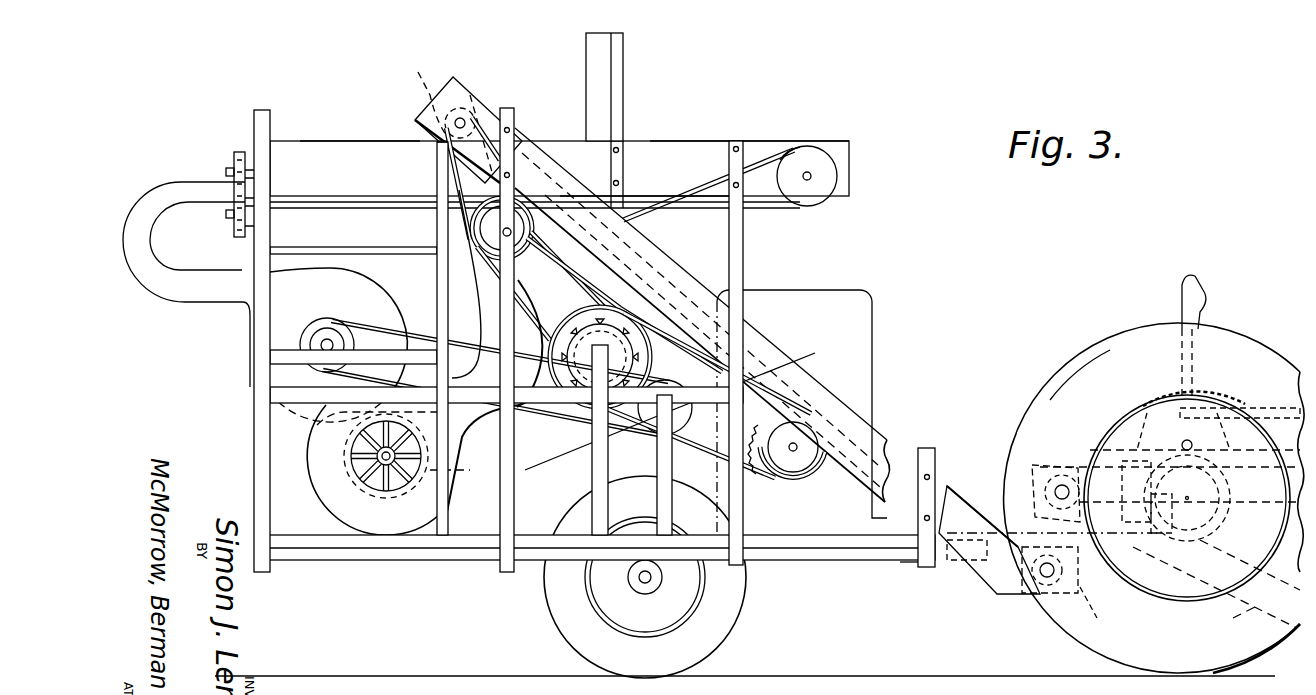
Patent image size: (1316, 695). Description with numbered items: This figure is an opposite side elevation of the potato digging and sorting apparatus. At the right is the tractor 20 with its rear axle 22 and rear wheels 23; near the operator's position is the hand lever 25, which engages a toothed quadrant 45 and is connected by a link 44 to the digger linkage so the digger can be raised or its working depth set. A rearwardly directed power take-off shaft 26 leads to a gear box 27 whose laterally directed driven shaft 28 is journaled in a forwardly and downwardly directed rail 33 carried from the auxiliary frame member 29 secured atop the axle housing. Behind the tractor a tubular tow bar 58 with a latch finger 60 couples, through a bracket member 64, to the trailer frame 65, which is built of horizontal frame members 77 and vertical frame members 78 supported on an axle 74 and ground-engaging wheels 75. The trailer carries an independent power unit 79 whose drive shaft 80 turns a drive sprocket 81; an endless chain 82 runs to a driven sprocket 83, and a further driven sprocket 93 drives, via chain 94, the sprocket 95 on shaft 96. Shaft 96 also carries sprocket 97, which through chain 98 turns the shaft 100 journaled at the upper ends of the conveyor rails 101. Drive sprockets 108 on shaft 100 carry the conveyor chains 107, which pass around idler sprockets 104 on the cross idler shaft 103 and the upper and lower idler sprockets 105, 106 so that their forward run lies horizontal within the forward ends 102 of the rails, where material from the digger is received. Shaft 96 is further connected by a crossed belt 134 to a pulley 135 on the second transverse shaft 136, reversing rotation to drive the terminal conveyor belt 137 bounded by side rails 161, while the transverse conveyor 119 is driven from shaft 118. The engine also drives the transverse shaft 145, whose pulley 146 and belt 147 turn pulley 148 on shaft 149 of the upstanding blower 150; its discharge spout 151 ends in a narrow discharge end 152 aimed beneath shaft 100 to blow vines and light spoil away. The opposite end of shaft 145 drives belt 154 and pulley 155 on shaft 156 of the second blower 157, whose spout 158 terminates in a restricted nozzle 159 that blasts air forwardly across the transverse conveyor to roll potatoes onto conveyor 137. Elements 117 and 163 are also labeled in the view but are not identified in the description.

The tractor 20 is at (1262, 335).
The rear axle 22 is at (1230, 513).
The rear wheels 23 is at (1118, 340).
The hand lever 25 is at (1181, 282).
The power take-off shaft 26 is at (1150, 460).
The gear box 27 is at (1063, 483).
The driven shaft 28 is at (1028, 468).
The auxiliary frame member 29 is at (1244, 472).
The rail 33 is at (1258, 606).
The link 44 is at (1262, 408).
The toothed quadrant 45 is at (1178, 398).
The tow bar 58 is at (1002, 520).
The latch finger 60 is at (604, 66).
The bracket member 64 is at (962, 490).
The trailer frame 65 is at (915, 566).
The axle 74 is at (630, 588).
The ground-engaging wheels 75 is at (550, 598).
The horizontal frame members 77 is at (270, 397).
The vertical frame members 78 is at (268, 110).
The power unit 79 is at (872, 320).
The drive shaft 80 is at (794, 452).
The drive sprocket 81 is at (820, 480).
The endless chain 82 is at (764, 490).
The driven sprocket 83 is at (640, 358).
The driven sprocket 93 is at (578, 318).
The chain 94 is at (590, 280).
The sprocket 95 is at (560, 258).
The shaft 96 is at (510, 228).
The sprocket 97 is at (475, 221).
The chain 98 is at (462, 202).
The shaft 100 is at (460, 118).
The conveyor rails 101 is at (540, 160).
The forward ends 102 is at (1104, 614).
The cross idler shaft 103 is at (1035, 600).
The idler sprockets 104 is at (1085, 592).
The upper idler sprocket 105 is at (975, 580).
The lower idler sprocket 106 is at (1003, 586).
The conveyor chains 107 is at (880, 425).
The drive sprockets 108 is at (424, 90).
The flange 117 is at (239, 160).
The shaft 118 is at (226, 172).
The conveyor 119 is at (350, 144).
The crossed belt 134 is at (683, 197).
The pulley 135 is at (795, 132).
The transverse shaft 136 is at (809, 174).
The conveyor belt 137 is at (642, 142).
The transverse shaft 145 is at (748, 376).
The pulley 146 is at (690, 432).
The belt 147 is at (572, 456).
The pulley 148 is at (375, 495).
The shaft 149 is at (380, 462).
The blower 150 is at (310, 446).
The discharge spout 151 is at (538, 456).
The discharge end 152 is at (432, 155).
The belt 154 is at (390, 318).
The pulley 155 is at (312, 330).
The shaft 156 is at (331, 341).
The second blower 157 is at (370, 288).
The spout 158 is at (213, 292).
The nozzle 159 is at (258, 194).
The side rails 161 is at (690, 147).
The bar 163 is at (297, 146).